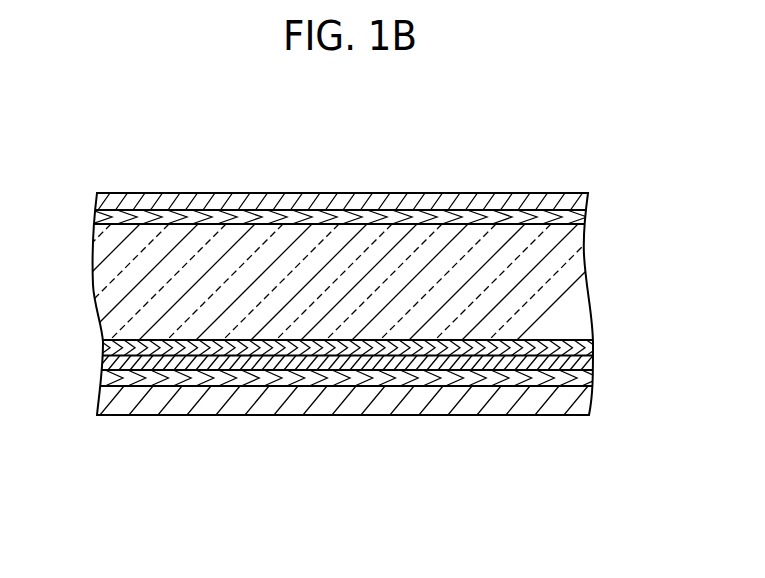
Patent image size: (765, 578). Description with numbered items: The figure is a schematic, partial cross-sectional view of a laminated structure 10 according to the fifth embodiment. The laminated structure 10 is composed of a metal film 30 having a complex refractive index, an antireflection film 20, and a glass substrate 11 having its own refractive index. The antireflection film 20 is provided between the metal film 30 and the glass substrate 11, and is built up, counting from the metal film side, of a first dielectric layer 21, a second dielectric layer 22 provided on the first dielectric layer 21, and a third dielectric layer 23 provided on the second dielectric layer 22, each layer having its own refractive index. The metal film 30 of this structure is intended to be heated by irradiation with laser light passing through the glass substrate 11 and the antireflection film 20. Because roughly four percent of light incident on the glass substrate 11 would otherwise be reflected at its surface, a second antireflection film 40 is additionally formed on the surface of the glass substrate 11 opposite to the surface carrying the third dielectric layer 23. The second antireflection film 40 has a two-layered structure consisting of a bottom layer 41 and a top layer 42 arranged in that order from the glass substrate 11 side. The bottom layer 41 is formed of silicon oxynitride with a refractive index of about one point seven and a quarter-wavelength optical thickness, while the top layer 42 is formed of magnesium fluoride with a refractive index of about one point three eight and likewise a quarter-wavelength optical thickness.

The laminated structure 10 is at (412, 166).
The glass substrate 11 is at (475, 242).
The antireflection film 20 is at (127, 476).
The first dielectric layer 21 is at (155, 378).
The second dielectric layer 22 is at (250, 358).
The third dielectric layer 23 is at (390, 350).
The metal film 30 is at (533, 400).
The second antireflection film 40 is at (165, 130).
The bottom layer 41 is at (192, 192).
The top layer 42 is at (302, 192).